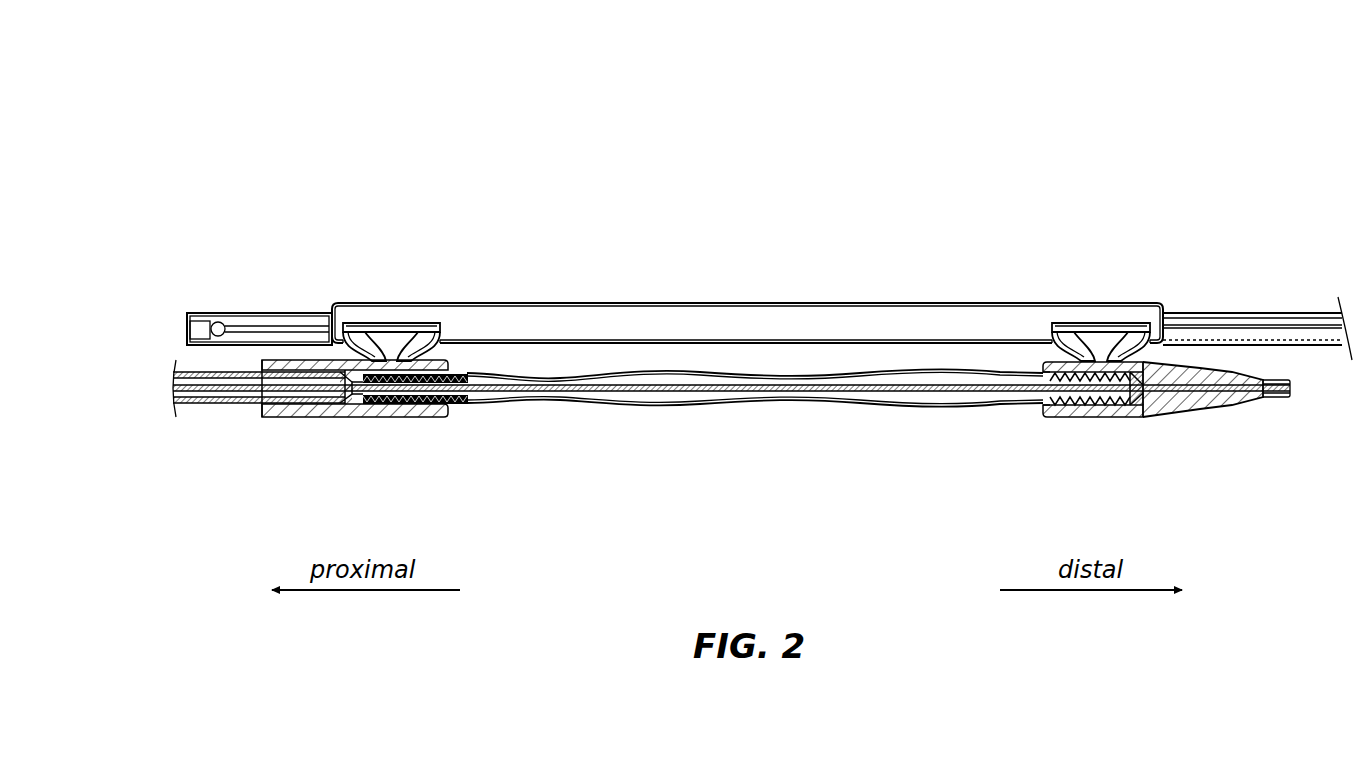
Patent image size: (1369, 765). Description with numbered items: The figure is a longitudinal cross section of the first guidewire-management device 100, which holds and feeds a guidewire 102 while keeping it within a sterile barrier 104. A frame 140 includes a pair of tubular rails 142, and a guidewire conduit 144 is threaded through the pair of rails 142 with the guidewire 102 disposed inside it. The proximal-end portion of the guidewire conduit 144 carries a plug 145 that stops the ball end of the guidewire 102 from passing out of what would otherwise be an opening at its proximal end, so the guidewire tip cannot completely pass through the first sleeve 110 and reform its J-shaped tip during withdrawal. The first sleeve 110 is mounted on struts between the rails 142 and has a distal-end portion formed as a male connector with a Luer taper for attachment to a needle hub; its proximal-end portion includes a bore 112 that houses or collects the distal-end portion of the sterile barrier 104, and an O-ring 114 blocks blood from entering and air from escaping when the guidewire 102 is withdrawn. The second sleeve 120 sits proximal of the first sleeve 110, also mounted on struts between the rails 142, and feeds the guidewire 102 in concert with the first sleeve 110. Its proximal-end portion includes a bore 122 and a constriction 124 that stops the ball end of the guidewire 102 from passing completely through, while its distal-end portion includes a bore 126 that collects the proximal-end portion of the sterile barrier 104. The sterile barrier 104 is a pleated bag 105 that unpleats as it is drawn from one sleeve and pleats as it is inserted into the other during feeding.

The first guidewire-management device 100 is at (790, 142).
The guidewire 102 is at (275, 325).
The sterile barrier 104 is at (582, 402).
The pleated bag 105 is at (755, 388).
The first sleeve 110 is at (1150, 426).
The bore 112 is at (1030, 411).
The 'O'-ring 114 is at (1130, 415).
The second sleeve 120 is at (356, 423).
The bore 122 is at (252, 414).
The constriction 124 is at (306, 416).
The bore 126 is at (458, 408).
The frame 140 is at (668, 272).
The tubular rails 142 is at (840, 315).
The guidewire conduit 144 is at (1233, 313).
The plug 145 is at (193, 314).